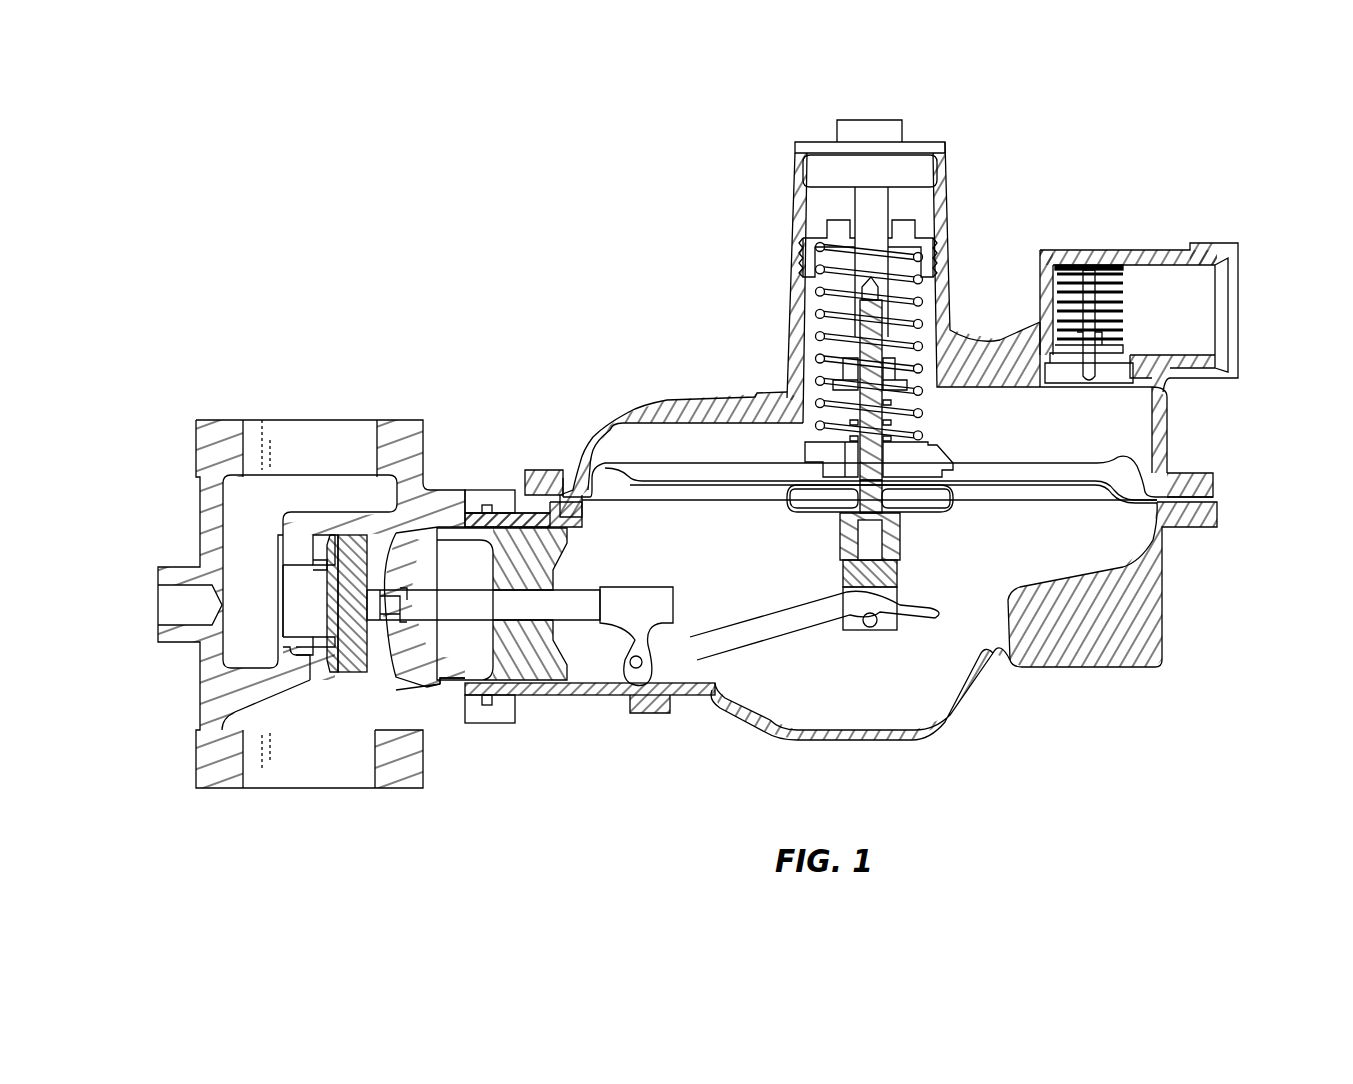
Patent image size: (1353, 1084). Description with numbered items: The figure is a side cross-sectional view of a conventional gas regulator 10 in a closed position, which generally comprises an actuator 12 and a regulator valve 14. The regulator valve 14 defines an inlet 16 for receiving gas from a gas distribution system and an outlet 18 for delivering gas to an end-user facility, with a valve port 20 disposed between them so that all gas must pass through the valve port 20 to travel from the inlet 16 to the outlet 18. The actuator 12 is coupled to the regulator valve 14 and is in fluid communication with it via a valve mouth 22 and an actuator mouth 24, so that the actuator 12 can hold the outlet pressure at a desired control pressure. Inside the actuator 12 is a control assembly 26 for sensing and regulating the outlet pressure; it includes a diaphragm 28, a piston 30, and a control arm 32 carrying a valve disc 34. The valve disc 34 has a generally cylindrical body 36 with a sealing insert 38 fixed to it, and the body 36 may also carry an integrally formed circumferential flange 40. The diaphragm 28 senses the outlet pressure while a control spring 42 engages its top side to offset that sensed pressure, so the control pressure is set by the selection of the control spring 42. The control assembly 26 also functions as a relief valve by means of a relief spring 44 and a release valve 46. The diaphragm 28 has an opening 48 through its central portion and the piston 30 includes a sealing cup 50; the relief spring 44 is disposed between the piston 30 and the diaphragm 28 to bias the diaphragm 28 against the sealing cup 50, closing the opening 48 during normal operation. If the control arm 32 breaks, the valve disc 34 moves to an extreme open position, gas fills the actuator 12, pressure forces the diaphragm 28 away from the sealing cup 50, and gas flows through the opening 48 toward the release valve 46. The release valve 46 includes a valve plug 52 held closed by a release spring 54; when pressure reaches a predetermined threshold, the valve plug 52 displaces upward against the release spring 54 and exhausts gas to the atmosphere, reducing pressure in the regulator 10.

The gas regulator 10 is at (985, 113).
The actuator 12 is at (950, 272).
The regulator valve 14 is at (413, 412).
The inlet 16 is at (243, 445).
The outlet 18 is at (247, 770).
The valve port 20 is at (297, 598).
The valve mouth 22 is at (440, 710).
The actuator mouth 24 is at (535, 695).
The control assembly 26 is at (928, 530).
The diaphragm 28 is at (1100, 470).
The piston 30 is at (870, 352).
The control arm 32 is at (695, 660).
The valve disc 34 is at (352, 528).
The body 36 is at (352, 672).
The sealing insert 38 is at (340, 610).
The circumferential flange 40 is at (330, 540).
The control spring 42 is at (832, 290).
The relief spring 44 is at (893, 398).
The release valve 46 is at (1128, 310).
The opening 48 is at (880, 468).
The sealing cup 50 is at (790, 510).
The valve plug 52 is at (1110, 375).
The release spring 54 is at (1125, 272).